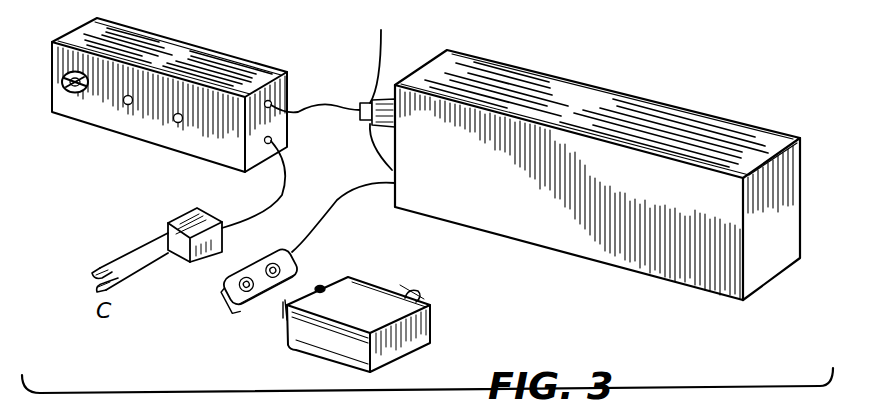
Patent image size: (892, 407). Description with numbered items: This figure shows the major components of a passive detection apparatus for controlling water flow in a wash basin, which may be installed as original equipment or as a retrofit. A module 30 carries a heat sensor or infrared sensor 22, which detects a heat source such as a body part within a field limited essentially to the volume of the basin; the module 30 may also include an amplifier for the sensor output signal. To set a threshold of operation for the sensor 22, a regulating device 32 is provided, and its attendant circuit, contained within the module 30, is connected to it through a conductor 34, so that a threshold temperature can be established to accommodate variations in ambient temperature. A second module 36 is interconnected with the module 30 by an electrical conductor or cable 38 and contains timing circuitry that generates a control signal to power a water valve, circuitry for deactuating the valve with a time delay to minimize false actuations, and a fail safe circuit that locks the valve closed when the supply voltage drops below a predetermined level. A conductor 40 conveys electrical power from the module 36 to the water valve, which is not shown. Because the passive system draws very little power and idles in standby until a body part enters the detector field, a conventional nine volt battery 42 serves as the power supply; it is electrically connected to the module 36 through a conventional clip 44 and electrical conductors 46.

The heat sensor or infrared sensor 22 is at (62, 78).
The module 30 is at (133, 125).
The regulating device 32 is at (142, 256).
The conductor 34 is at (256, 214).
The module 36 is at (746, 100).
The electrical conductor or cable 38 is at (331, 101).
The conductor 40 is at (384, 48).
The nine volt battery 42 is at (416, 300).
The clip 44 is at (236, 304).
The electrical conductors 46 is at (330, 222).